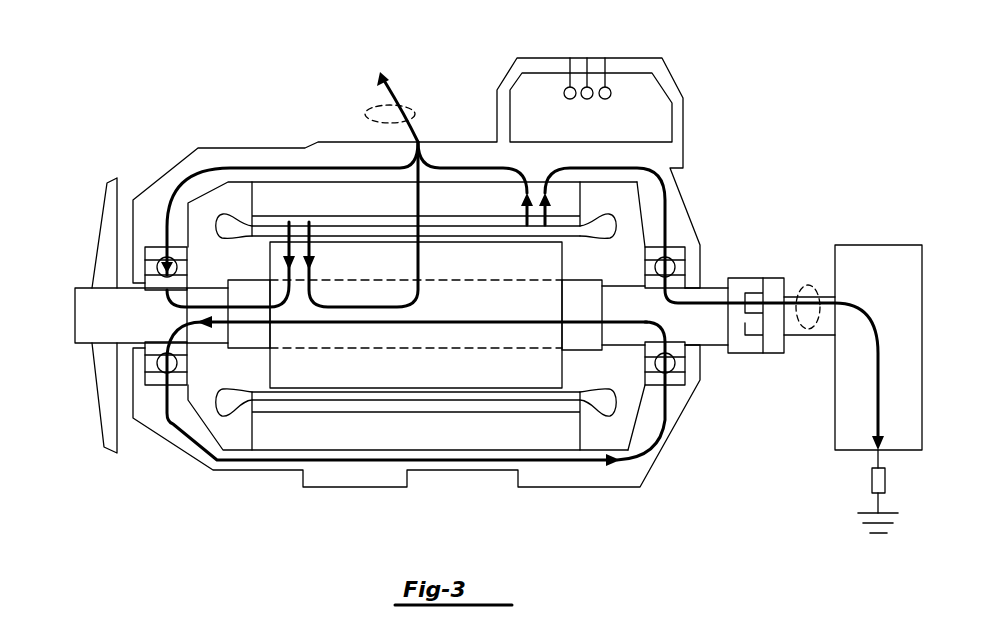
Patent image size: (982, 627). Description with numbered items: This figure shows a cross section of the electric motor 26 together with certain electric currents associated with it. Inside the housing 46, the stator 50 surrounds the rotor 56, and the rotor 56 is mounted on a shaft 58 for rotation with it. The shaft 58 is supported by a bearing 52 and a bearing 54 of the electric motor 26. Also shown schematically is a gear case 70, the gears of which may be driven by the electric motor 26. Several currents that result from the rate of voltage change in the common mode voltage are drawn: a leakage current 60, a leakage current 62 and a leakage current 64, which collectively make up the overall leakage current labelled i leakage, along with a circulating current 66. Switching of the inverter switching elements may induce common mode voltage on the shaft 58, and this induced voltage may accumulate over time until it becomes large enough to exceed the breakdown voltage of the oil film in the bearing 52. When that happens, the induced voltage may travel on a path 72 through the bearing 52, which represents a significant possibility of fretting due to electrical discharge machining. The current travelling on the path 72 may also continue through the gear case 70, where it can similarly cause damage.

The electric motor 26 is at (184, 456).
The housing 46 is at (247, 148).
The stator 50 is at (268, 453).
The bearing 52 is at (687, 255).
The bearing 54 is at (145, 258).
The rotor 56 is at (562, 370).
The shaft 58 is at (75, 315).
The leakage current 60 is at (467, 167).
The leakage current 62 is at (298, 167).
The leakage current 64 is at (420, 260).
The circulating current 66 is at (560, 462).
The gear case 70 is at (876, 240).
The path 72 is at (683, 200).